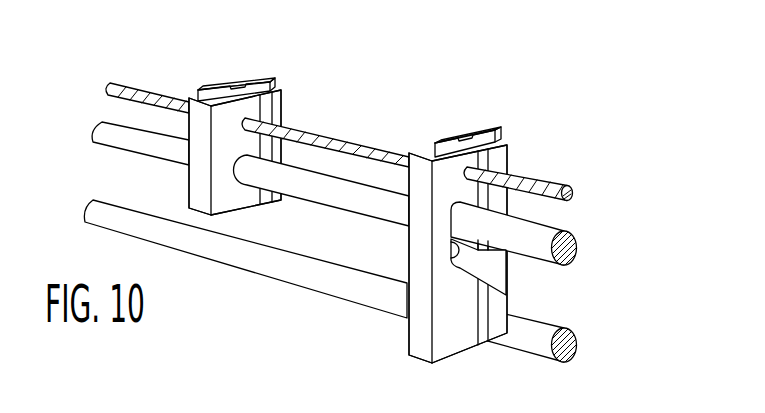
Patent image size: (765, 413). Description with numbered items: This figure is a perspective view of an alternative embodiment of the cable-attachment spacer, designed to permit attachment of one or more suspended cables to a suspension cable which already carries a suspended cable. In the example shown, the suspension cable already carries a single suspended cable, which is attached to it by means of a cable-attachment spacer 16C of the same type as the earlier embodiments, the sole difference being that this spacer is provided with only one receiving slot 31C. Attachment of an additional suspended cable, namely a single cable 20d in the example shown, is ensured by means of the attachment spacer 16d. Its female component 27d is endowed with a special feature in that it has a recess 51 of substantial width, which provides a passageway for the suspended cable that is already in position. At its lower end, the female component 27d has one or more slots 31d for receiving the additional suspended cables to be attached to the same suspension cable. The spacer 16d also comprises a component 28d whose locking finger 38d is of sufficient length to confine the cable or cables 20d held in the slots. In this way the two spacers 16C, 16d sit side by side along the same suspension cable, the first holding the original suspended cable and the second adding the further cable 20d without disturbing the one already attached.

The cable-attachment spacer 16C is at (246, 144).
The attachment spacer 16d is at (464, 224).
The additional suspended cable 20d is at (557, 332).
The female component 27d is at (415, 327).
The component 28d is at (459, 138).
The receiving slot 31C is at (255, 156).
The slot 31d is at (440, 338).
The locking finger 38d is at (498, 202).
The recess 51 is at (451, 258).